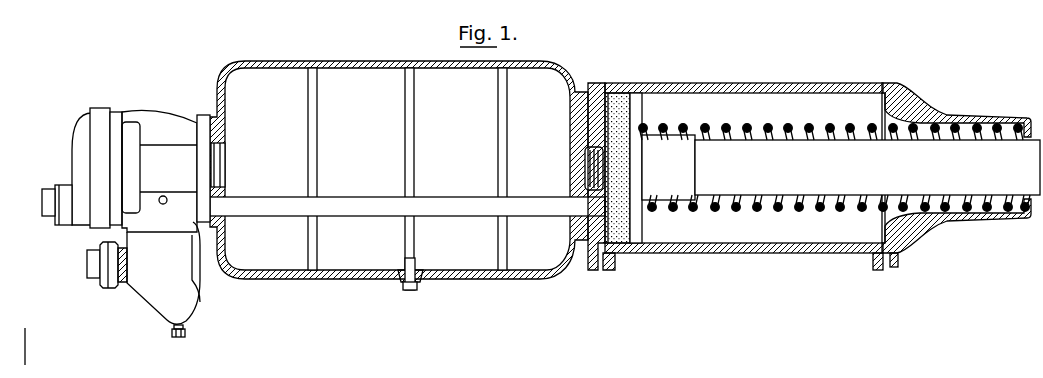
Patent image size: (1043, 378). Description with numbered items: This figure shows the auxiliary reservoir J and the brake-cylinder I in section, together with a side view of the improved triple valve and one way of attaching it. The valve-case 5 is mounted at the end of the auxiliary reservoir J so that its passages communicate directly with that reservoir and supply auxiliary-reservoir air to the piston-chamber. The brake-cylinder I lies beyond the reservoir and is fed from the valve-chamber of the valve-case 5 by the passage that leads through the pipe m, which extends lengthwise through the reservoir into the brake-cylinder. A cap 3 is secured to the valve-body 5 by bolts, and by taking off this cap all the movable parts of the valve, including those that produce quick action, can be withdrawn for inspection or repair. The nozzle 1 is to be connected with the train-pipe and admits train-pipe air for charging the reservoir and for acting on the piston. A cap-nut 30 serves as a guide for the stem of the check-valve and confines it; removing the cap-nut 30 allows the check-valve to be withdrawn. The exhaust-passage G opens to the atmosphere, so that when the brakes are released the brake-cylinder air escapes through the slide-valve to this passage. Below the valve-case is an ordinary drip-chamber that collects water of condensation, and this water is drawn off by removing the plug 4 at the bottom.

The auxiliary reservoir J is at (373, 62).
The brake-cylinder I is at (752, 83).
The pipe m is at (277, 210).
The cap 3 is at (87, 136).
The valve-case 5 is at (160, 127).
The cap-nut 30 is at (47, 198).
The nozzle 1 is at (93, 264).
The plug 4 is at (185, 337).
The exhaust-passage G is at (166, 204).